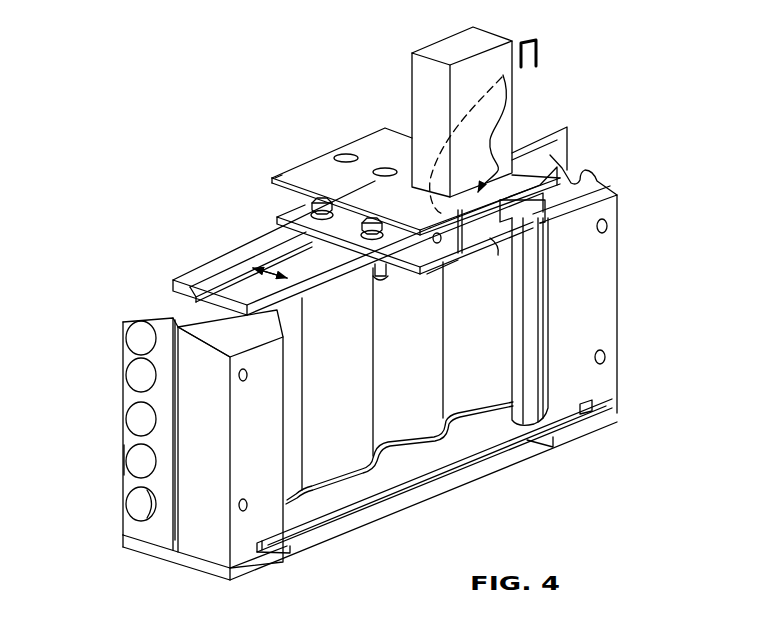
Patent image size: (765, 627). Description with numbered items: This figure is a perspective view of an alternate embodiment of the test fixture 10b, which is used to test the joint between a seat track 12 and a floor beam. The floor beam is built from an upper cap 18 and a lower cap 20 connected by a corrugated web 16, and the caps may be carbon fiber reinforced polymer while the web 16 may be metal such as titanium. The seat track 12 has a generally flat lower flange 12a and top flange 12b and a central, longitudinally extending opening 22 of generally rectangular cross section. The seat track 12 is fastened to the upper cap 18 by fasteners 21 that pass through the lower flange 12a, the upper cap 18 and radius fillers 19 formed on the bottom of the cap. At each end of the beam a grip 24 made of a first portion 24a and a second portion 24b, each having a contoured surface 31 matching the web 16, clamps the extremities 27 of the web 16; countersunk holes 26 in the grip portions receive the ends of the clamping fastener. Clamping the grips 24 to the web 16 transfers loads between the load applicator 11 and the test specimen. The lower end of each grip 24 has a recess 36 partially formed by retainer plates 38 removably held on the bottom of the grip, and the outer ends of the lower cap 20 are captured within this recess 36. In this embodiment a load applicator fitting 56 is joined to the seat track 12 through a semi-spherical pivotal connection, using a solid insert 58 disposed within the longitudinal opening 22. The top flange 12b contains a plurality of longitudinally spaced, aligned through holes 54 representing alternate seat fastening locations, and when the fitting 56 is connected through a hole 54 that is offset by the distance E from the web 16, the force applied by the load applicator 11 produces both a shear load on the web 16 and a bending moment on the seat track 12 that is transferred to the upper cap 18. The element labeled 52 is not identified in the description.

The test fixture 10b is at (624, 150).
The load applicator 11 is at (414, 120).
The seat track 12 is at (302, 174).
The lower flange 12a is at (278, 219).
The top flange 12b is at (272, 165).
The corrugated web 16 is at (420, 414).
The upper cap 18 is at (197, 266).
The radius fillers 19 is at (386, 282).
The lower cap 20 is at (462, 440).
The fasteners 21 is at (305, 202).
The longitudinal opening 22 is at (516, 206).
The grips 24 is at (371, 351).
The first portion of grip 24a is at (195, 520).
The second portion of grip 24b is at (134, 432).
The countersunk holes 26 is at (122, 468).
The extremities of the web 27 is at (298, 517).
The contoured surface 31 is at (181, 321).
The recess 36 is at (272, 549).
The retainer plates 38 is at (168, 553).
The thin plate 52 is at (260, 233).
The through holes 54 is at (378, 163).
The load applicator fitting 56 is at (428, 88).
The solid insert 58 is at (488, 228).